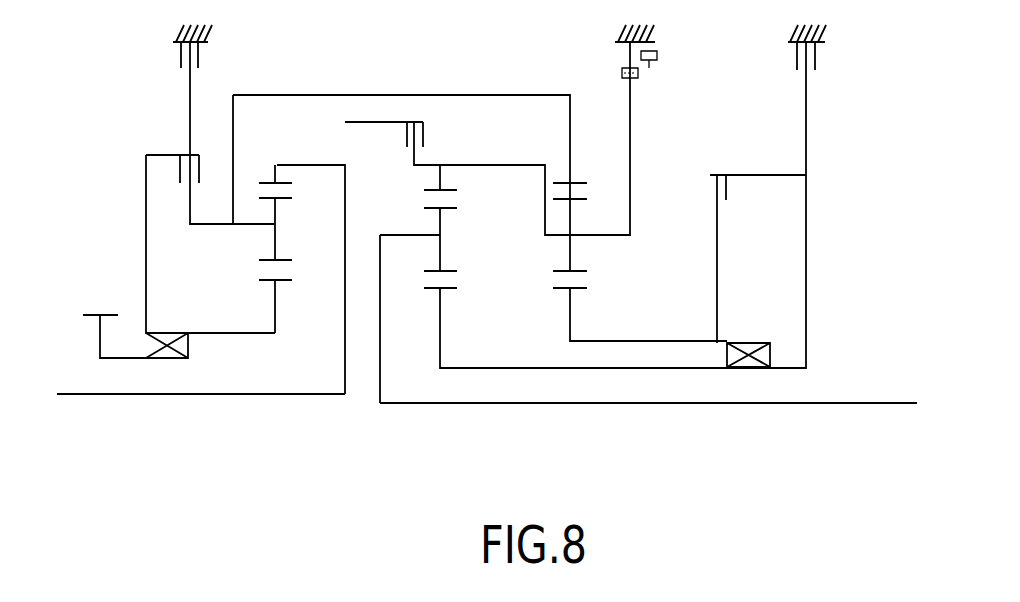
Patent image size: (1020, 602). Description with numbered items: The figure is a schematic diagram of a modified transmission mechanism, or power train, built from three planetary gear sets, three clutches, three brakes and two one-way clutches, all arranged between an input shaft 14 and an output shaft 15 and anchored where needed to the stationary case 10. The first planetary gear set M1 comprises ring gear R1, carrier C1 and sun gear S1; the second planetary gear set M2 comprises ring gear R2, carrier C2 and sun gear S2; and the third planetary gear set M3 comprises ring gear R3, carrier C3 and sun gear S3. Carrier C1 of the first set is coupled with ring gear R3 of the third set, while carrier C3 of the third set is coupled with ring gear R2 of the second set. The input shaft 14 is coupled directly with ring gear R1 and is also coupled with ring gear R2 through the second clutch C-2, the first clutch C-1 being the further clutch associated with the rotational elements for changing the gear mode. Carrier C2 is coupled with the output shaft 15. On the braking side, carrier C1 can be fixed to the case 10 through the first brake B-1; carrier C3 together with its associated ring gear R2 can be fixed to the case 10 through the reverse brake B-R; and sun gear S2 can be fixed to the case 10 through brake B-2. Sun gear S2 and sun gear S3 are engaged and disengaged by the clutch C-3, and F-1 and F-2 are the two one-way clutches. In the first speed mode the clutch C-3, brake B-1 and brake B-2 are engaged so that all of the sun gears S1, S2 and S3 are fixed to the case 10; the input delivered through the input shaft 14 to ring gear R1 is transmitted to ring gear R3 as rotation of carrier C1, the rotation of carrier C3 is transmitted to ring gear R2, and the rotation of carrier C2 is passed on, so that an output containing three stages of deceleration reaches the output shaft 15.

The case 10 is at (212, 34).
The first brake B-1 is at (181, 47).
The first clutch C-1 is at (162, 155).
The ring gear R1 is at (267, 183).
The carrier C1 is at (244, 226).
The sun gear S1 is at (284, 262).
The one-way clutch F-1 is at (188, 343).
The first planetary gear set M1 is at (288, 297).
The input shaft 14 is at (267, 395).
The second clutch C-2 is at (422, 137).
The carrier C2 is at (405, 235).
The ring gear R2 is at (444, 190).
The sun gear S2 is at (448, 270).
The sun gear S3 is at (565, 292).
The second planetary gear set M2 is at (450, 372).
The third planetary gear set M3 is at (568, 372).
The reverse brake B-R is at (606, 69).
The ring gear R3 is at (574, 183).
The carrier C3 is at (596, 236).
The clutch C-3 is at (710, 193).
The brake B-2 is at (795, 47).
The one-way clutch F-2 is at (727, 358).
The output shaft 15 is at (823, 404).